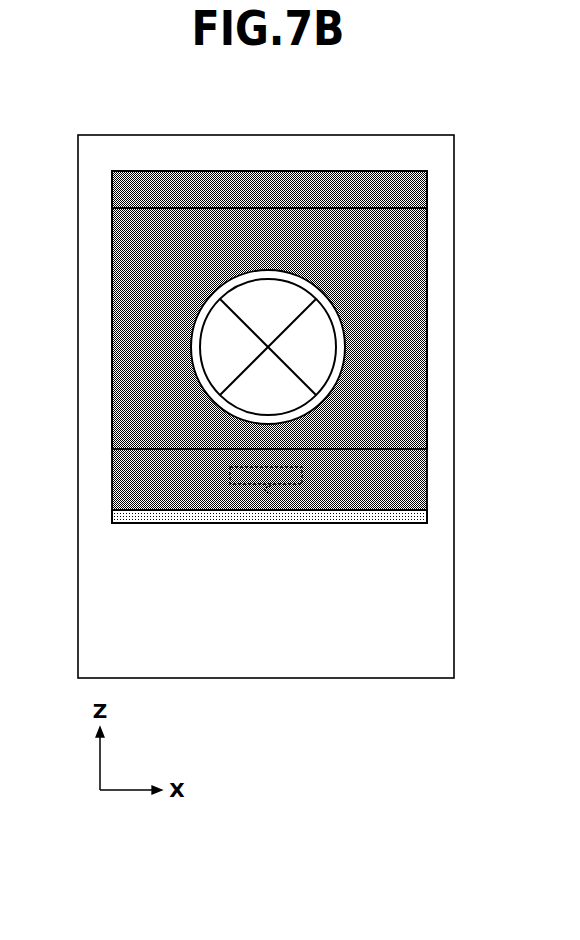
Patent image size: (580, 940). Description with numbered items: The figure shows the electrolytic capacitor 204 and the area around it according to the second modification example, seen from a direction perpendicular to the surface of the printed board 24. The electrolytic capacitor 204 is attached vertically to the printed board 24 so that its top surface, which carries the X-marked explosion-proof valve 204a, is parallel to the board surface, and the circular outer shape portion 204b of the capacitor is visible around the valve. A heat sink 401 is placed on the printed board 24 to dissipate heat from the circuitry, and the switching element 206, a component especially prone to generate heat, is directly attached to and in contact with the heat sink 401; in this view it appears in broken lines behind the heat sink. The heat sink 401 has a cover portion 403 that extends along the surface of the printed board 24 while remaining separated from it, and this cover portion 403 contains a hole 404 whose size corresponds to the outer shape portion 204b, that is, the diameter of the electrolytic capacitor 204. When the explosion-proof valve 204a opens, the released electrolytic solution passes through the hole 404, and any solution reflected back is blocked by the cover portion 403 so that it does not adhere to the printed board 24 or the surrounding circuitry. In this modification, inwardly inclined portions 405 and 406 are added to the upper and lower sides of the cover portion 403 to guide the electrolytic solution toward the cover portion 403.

The printed board 24 is at (88, 241).
The electrolytic capacitor 204 is at (179, 281).
The explosion-proof valve 204a is at (272, 279).
The outer shape portion 204b is at (229, 279).
The switching element 206 is at (230, 472).
The heat sink 401 is at (133, 419).
The cover portion 403 is at (412, 262).
The hole 404 is at (193, 281).
The inwardly inclined portion 405 is at (397, 185).
The inwardly inclined portion 406 is at (373, 498).